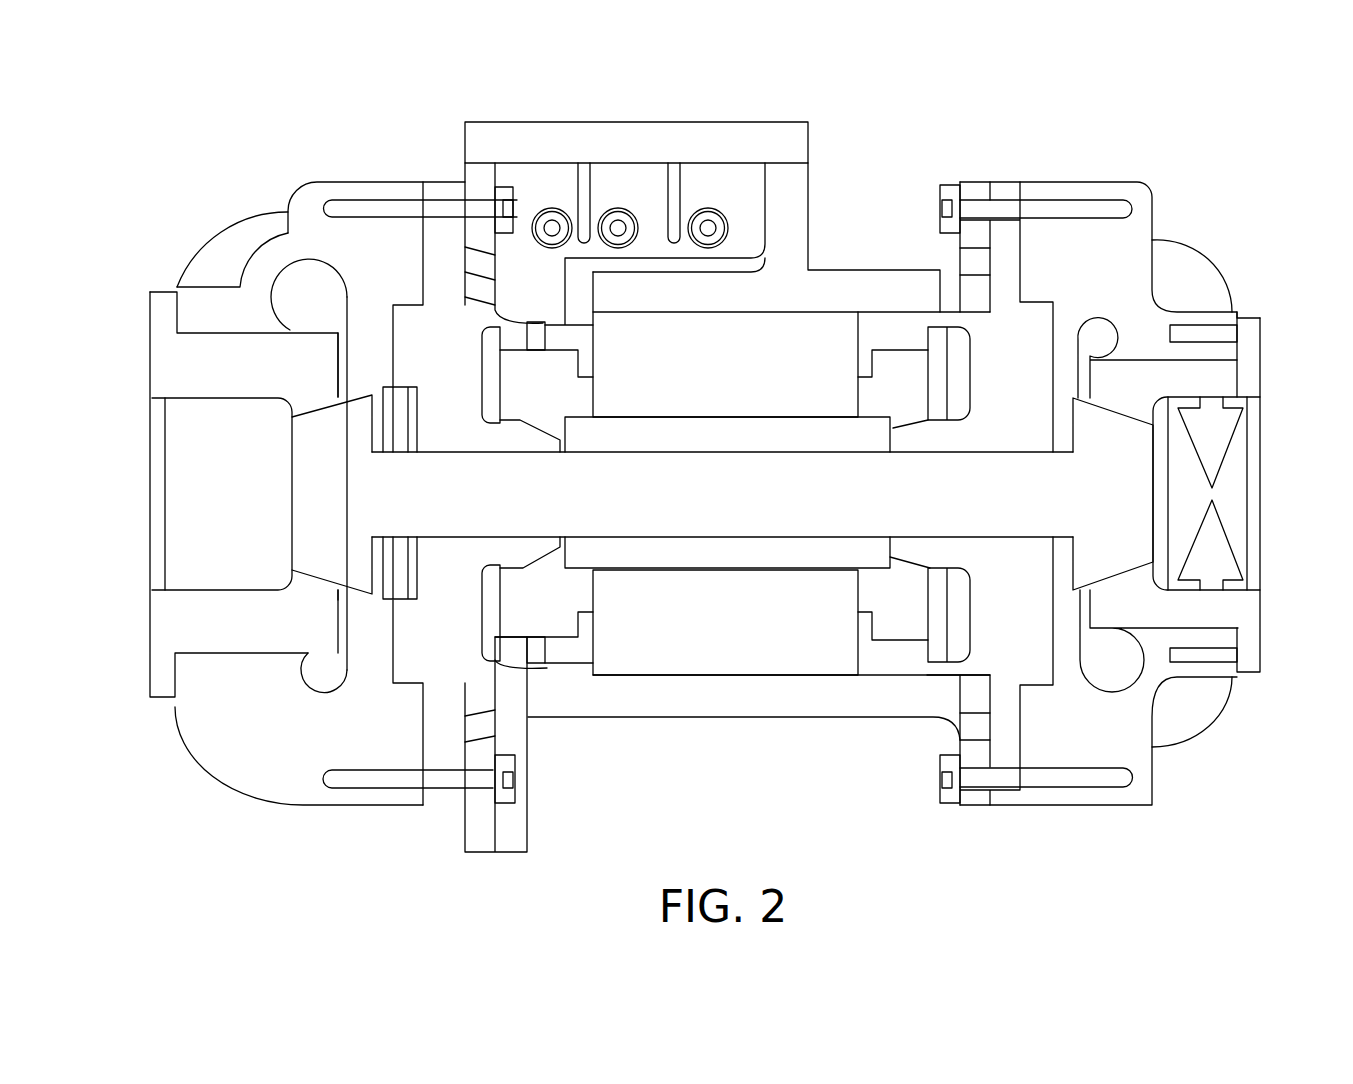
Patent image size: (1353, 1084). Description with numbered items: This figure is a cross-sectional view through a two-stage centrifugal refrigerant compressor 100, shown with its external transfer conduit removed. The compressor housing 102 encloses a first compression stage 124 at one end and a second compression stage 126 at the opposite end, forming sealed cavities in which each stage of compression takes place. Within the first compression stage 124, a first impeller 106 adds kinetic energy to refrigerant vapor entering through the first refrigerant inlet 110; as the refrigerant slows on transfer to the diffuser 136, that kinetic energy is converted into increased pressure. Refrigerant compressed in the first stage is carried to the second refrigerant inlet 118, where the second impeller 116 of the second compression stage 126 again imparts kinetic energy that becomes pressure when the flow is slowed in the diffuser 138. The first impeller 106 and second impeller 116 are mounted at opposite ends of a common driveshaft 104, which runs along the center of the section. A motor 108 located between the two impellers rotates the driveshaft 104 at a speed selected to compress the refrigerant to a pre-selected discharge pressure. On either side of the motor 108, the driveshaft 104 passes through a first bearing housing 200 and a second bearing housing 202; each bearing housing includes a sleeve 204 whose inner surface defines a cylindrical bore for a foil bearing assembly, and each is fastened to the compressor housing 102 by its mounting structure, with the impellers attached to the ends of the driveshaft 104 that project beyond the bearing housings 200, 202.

The compressor 100 is at (1085, 140).
The compressor housing 102 is at (283, 150).
The driveshaft 104 is at (670, 537).
The first impeller 106 is at (317, 412).
The motor 108 is at (745, 677).
The first refrigerant inlet 110 is at (165, 460).
The second impeller 116 is at (1113, 410).
The second refrigerant inlet 118 is at (1248, 428).
The first compression stage 124 is at (148, 728).
The second compression stage 126 is at (1215, 752).
The diffuser 136 is at (330, 625).
The diffuser 138 is at (1075, 368).
The first bearing housing 200 is at (440, 150).
The second bearing housing 202 is at (1010, 150).
The sleeve 204 is at (517, 563).